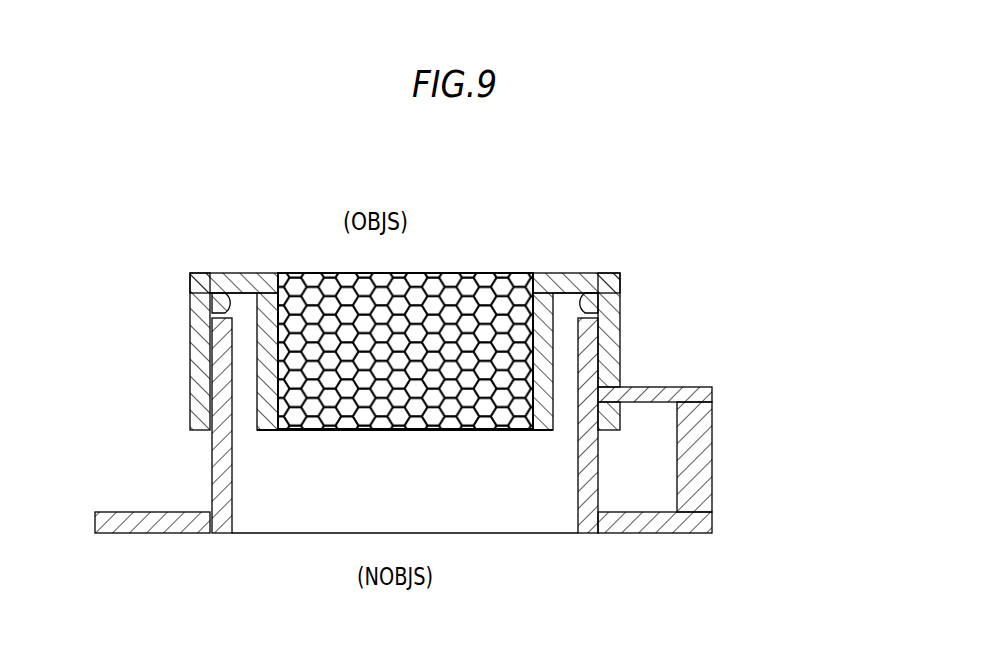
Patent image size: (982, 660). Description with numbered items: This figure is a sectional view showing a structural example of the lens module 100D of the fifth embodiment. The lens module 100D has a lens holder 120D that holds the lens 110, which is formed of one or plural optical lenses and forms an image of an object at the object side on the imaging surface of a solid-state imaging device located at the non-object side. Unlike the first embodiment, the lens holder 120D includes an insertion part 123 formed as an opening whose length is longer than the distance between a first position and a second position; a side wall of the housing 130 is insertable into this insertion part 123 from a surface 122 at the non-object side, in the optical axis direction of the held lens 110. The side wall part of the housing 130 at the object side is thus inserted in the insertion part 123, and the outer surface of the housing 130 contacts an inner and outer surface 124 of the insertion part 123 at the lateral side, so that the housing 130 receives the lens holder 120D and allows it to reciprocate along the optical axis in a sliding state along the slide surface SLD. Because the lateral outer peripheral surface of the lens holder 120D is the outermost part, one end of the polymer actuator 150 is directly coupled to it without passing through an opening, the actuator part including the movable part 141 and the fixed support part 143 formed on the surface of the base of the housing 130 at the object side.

The lens module 100D is at (407, 156).
The lens 110 is at (483, 272).
The lens holder 120D is at (217, 273).
The surface 122 is at (542, 432).
The insertion part 123 is at (243, 422).
The inner and outer surface 124 is at (190, 285).
The housing 130 is at (648, 533).
The movable part 141 is at (647, 388).
The fixed support part 143 is at (705, 460).
The polymer actuator 150 is at (470, 490).
The slide surface SLD is at (577, 440).